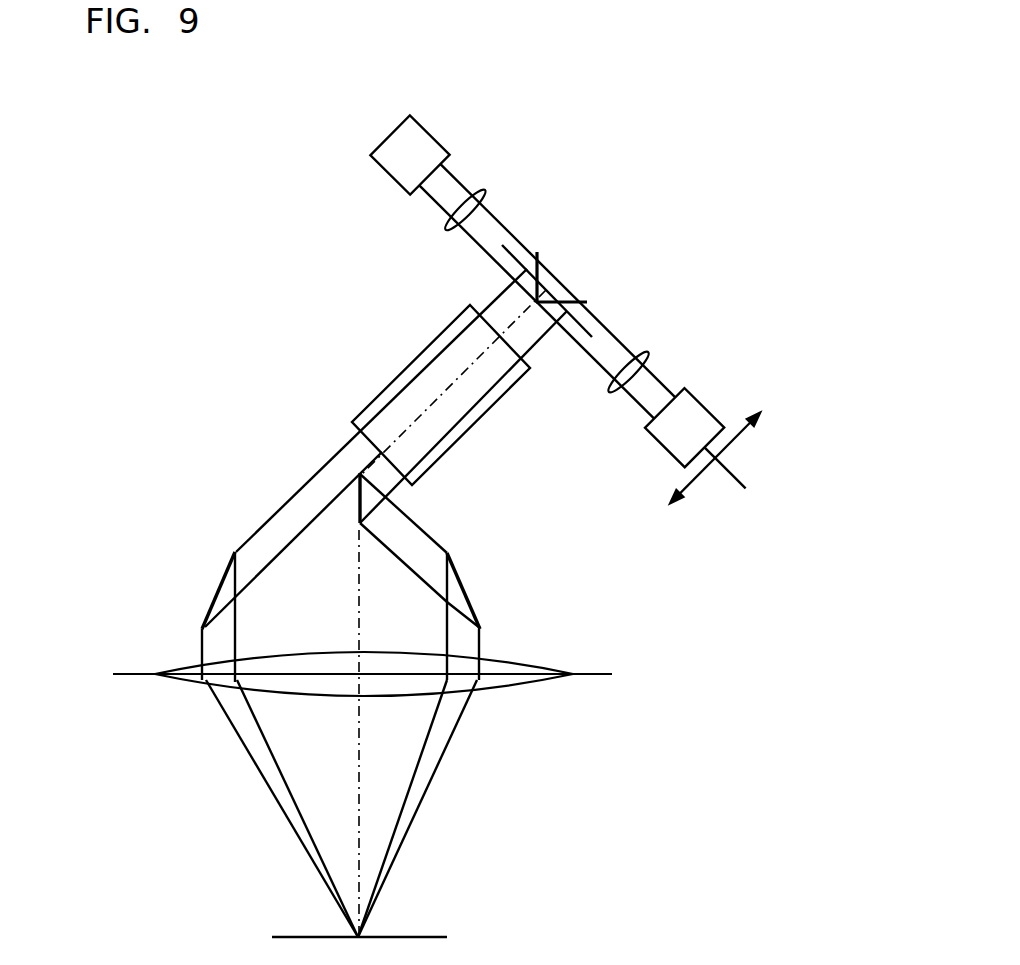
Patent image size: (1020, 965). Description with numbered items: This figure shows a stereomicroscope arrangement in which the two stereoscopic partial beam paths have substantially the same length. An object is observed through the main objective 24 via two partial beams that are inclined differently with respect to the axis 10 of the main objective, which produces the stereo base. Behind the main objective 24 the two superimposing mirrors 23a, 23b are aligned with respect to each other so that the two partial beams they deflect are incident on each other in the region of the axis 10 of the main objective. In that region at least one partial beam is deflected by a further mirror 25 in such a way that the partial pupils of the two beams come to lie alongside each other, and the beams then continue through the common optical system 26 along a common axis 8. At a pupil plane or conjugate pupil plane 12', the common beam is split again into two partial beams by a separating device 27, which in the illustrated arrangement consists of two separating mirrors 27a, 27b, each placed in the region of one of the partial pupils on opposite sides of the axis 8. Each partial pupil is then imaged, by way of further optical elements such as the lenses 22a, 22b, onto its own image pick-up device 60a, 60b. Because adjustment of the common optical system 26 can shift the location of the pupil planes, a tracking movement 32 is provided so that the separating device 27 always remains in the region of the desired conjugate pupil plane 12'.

The common optical axis 8 is at (382, 453).
The axis of the main objective 10 is at (358, 778).
The conjugate pupil plane 12' is at (784, 476).
The lens 22a is at (452, 216).
The lens 22b is at (648, 355).
The superimposing mirror 23a is at (467, 597).
The superimposing mirror 23b is at (214, 597).
The main objective 24 is at (175, 668).
The further mirror 25 is at (360, 498).
The common optical system 26 is at (412, 368).
The separating device 27 is at (557, 280).
The separating mirror 27a is at (541, 257).
The separating mirror 27b is at (588, 301).
The tracking movement 32 is at (735, 445).
The image pick-up device 60a is at (410, 156).
The image pick-up device 60b is at (686, 430).